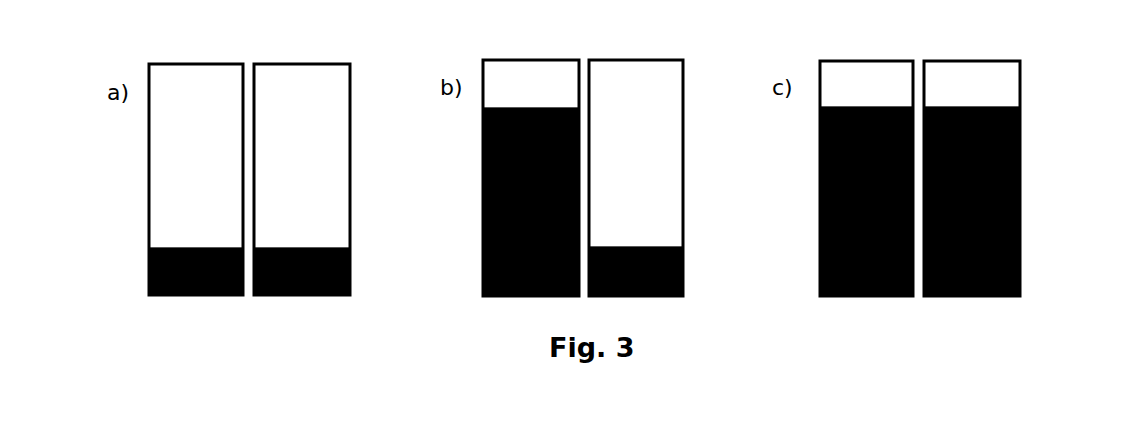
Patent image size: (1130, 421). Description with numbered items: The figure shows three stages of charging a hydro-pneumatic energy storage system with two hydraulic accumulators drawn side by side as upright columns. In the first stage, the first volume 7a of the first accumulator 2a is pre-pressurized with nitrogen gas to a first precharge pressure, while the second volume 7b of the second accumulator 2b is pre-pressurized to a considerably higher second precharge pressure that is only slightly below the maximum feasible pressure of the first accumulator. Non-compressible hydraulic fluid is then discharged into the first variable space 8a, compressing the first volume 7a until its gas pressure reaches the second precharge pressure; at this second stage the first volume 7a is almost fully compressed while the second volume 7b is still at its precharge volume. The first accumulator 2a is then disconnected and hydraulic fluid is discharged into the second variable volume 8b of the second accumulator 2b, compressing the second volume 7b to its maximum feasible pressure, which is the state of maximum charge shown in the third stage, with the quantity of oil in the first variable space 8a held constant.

The first accumulator 2a is at (149, 129).
The second accumulator 2b is at (350, 120).
The first volume 7a is at (212, 231).
The second volume 7b is at (318, 232).
The first variable space 8a is at (149, 277).
The second variable volume 8b is at (350, 277).